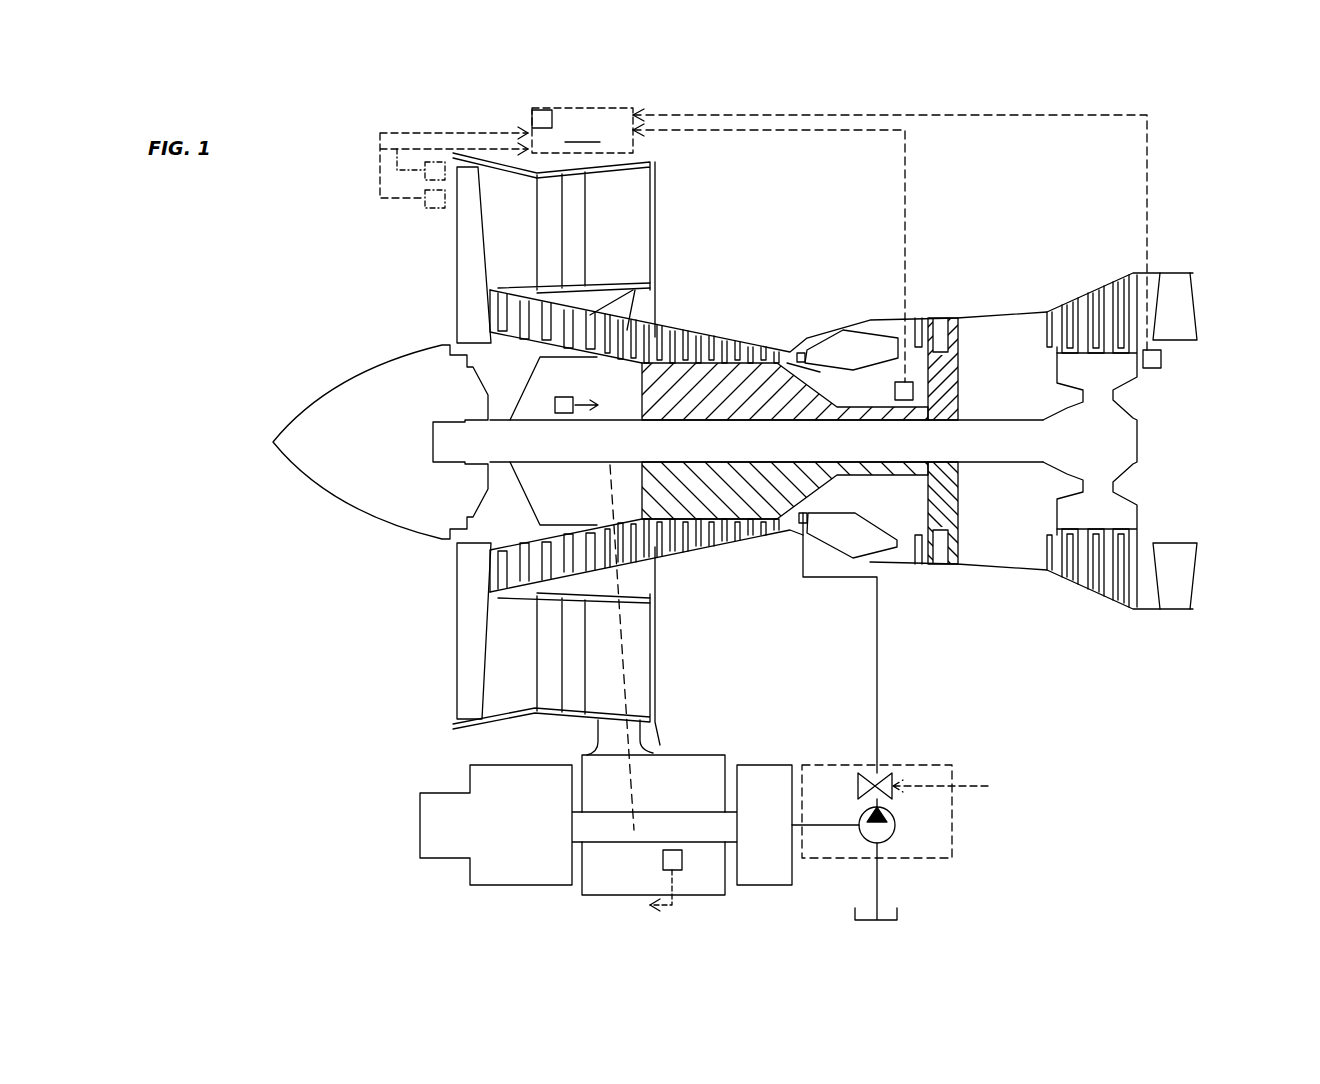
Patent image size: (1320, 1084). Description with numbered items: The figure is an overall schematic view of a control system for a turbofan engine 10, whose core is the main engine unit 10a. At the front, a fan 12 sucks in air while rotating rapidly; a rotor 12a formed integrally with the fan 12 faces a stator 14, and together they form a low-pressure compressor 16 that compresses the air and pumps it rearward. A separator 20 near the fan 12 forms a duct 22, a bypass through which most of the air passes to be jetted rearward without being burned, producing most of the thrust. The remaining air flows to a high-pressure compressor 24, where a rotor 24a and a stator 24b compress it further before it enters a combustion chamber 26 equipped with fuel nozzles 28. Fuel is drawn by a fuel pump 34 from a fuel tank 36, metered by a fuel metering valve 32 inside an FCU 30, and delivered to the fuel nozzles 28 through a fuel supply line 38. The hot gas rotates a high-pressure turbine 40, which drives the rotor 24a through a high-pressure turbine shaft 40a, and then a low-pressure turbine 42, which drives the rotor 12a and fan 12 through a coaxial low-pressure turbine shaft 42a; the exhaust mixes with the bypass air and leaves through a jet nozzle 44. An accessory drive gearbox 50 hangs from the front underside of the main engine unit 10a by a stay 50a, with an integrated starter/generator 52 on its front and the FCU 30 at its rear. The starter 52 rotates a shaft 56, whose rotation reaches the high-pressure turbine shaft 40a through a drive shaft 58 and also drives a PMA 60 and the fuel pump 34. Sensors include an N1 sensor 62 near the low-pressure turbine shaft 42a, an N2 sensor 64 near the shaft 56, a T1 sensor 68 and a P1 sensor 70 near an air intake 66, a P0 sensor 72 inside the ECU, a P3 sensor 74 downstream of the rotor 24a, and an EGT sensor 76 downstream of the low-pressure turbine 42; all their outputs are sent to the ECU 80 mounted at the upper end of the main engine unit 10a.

The turbofan engine 10 is at (708, 236).
The main engine unit 10a is at (679, 620).
The fan 12 is at (468, 600).
The rotor 12a is at (547, 537).
The stator 14 is at (497, 593).
The low-pressure compressor 16 is at (564, 363).
The separator 20 is at (653, 293).
The duct 22 is at (630, 232).
The high-pressure compressor 24 is at (762, 542).
The rotor 24a is at (800, 380).
The stator 24b is at (720, 537).
The combustion chamber 26 is at (825, 347).
The fuel nozzles 28 is at (797, 355).
The FCU 30 is at (805, 765).
The fuel metering valve 32 is at (880, 780).
The fuel pump 34 is at (862, 815).
The fuel tank 36 is at (855, 916).
The fuel supply line 38 is at (877, 658).
The high-pressure turbine 40 is at (953, 360).
The high-pressure turbine shaft 40a is at (613, 467).
The low-pressure turbine 42 is at (1063, 377).
The low-pressure turbine shaft 42a is at (755, 452).
The jet nozzle 44 is at (1180, 393).
The accessory drive gearbox 50 is at (672, 753).
The stay 50a is at (598, 728).
The integrated starter/generator 52 is at (523, 837).
The shaft 56 is at (603, 842).
The drive shaft 58 is at (636, 783).
The PMA 60 is at (780, 837).
The N1 sensor 62 is at (555, 405).
The N2 sensor 64 is at (682, 860).
The air intake 66 is at (450, 150).
The T1 sensor 68 is at (423, 160).
The P1 sensor 70 is at (433, 209).
The P0 sensor 72 is at (532, 119).
The P3 sensor 74 is at (895, 390).
The EGT sensor 76 is at (1163, 357).
The ECU 80 is at (633, 143).